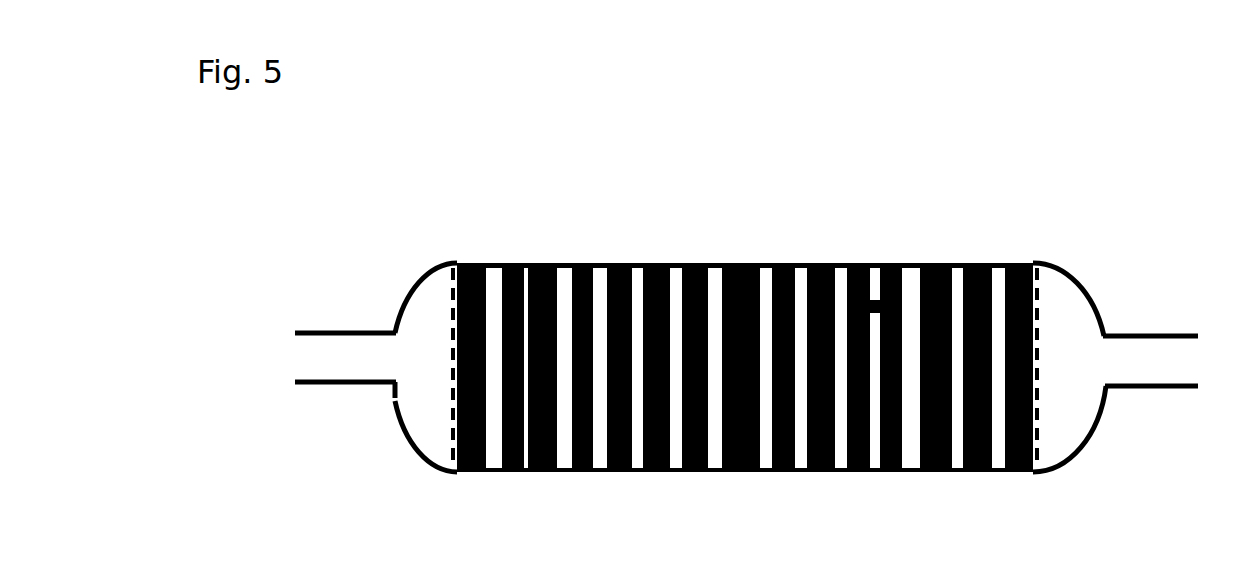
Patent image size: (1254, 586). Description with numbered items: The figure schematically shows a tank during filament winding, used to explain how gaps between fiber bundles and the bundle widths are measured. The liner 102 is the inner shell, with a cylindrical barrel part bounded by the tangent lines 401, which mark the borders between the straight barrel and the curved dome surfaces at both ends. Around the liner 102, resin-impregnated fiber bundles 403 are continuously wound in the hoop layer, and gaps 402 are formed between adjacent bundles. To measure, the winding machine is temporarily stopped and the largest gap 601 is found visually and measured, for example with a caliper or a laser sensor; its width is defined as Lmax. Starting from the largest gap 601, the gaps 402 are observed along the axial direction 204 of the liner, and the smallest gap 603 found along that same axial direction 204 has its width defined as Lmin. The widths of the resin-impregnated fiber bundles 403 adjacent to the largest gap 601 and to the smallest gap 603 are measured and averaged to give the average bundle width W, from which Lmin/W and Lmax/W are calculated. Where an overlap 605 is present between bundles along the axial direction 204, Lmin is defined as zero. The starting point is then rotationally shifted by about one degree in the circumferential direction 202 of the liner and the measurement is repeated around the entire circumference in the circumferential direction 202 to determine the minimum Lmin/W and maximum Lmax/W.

The liner 102 is at (1070, 307).
The circumferential direction 202 is at (1056, 324).
The axial direction 204 is at (438, 357).
The tangent lines 401 is at (457, 258).
The gaps 402 is at (912, 262).
The resin-impregnated fiber bundles 403 is at (690, 262).
The largest gap 601 is at (733, 330).
The smallest gap 603 is at (537, 333).
The overlap 605 is at (535, 416).